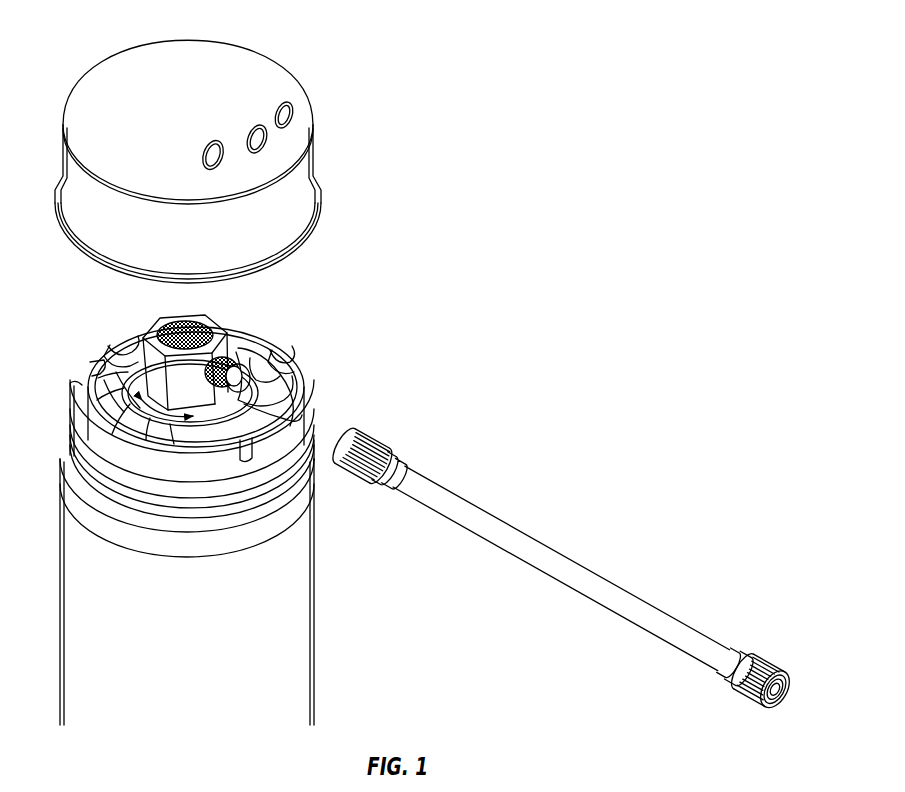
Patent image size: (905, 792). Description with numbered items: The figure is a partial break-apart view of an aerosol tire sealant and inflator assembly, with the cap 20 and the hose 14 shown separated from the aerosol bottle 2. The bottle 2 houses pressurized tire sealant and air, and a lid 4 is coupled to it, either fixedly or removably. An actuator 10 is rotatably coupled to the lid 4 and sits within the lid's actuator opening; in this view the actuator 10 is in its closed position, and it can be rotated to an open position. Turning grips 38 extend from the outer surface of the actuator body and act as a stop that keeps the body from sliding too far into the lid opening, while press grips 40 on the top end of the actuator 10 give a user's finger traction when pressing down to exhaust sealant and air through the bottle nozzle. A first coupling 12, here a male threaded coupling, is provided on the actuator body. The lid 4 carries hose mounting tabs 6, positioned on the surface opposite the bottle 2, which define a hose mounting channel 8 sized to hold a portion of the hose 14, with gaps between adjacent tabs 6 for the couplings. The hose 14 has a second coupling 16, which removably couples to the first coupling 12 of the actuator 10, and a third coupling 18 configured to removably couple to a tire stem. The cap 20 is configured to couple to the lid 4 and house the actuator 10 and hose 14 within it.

The aerosol bottle 2 is at (70, 615).
The lid 4 is at (90, 435).
The hose mounting tab 6 is at (253, 373).
The hose mounting channel 8 is at (277, 377).
The actuator 10 is at (180, 402).
The first coupling 12 is at (227, 357).
The hose 14 is at (572, 544).
The second coupling 16 is at (360, 433).
The third coupling 18 is at (763, 663).
The cap 20 is at (185, 58).
The turning grip 38 is at (147, 377).
The press grip 40 is at (163, 322).